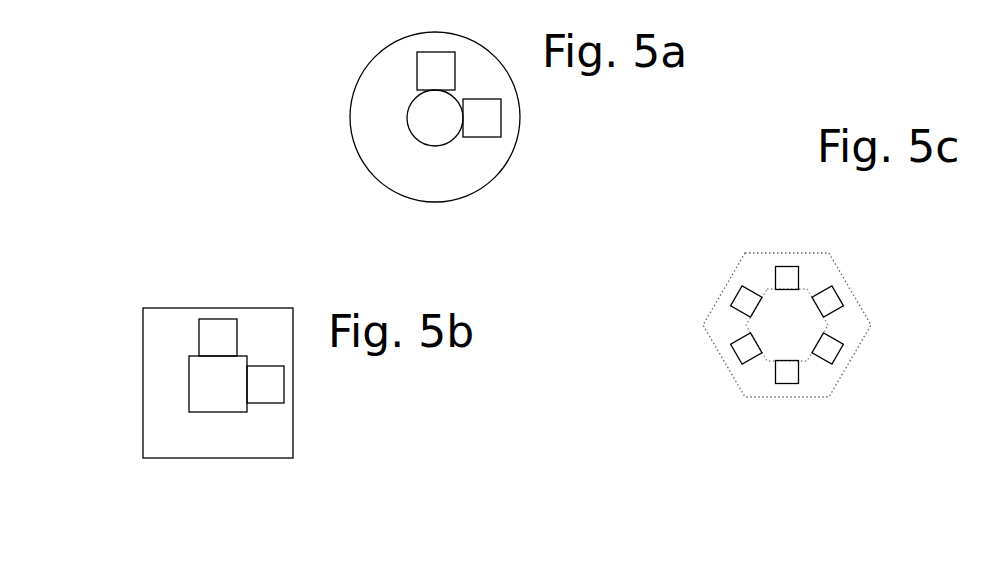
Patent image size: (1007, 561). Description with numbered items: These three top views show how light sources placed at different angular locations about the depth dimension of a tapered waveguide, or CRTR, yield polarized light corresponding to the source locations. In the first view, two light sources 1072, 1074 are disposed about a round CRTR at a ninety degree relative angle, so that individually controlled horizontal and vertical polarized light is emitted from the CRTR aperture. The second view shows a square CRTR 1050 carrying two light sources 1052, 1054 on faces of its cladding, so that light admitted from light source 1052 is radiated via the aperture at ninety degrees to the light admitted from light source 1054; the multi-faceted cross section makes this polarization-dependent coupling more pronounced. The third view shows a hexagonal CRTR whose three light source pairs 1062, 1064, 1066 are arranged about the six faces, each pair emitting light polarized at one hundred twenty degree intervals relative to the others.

In FIG. 5B, the square CRTR 1050 is at (143, 347).
In FIG. 5B, the light source 1052 is at (210, 323).
In FIG. 5B, the light source 1054 is at (265, 366).
In FIG. 5C, the light source pair 1062 is at (783, 385).
In FIG. 5C, the light source pair 1064 is at (788, 278).
In FIG. 5C, the light source pair 1066 is at (747, 298).
In FIG. 5A, the light source 1072 is at (501, 137).
In FIG. 5A, the light source 1074 is at (417, 53).